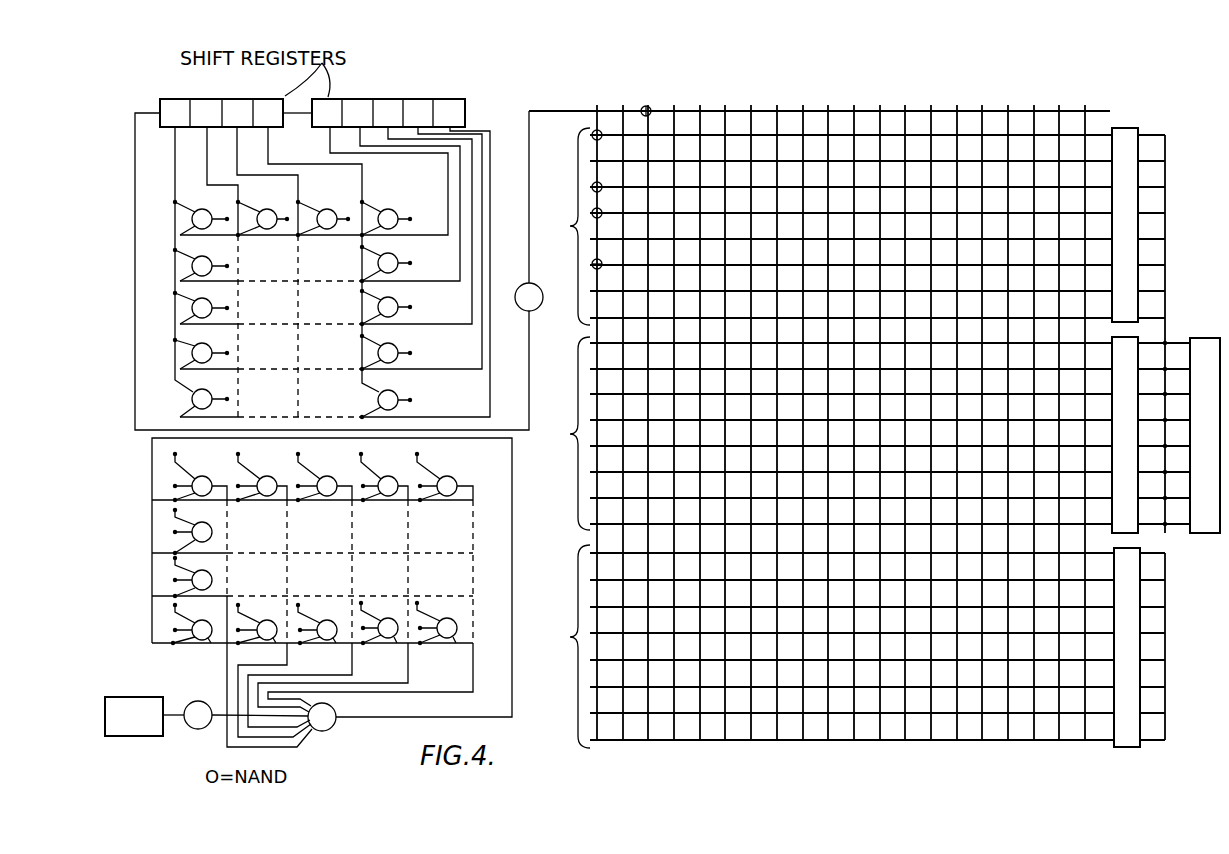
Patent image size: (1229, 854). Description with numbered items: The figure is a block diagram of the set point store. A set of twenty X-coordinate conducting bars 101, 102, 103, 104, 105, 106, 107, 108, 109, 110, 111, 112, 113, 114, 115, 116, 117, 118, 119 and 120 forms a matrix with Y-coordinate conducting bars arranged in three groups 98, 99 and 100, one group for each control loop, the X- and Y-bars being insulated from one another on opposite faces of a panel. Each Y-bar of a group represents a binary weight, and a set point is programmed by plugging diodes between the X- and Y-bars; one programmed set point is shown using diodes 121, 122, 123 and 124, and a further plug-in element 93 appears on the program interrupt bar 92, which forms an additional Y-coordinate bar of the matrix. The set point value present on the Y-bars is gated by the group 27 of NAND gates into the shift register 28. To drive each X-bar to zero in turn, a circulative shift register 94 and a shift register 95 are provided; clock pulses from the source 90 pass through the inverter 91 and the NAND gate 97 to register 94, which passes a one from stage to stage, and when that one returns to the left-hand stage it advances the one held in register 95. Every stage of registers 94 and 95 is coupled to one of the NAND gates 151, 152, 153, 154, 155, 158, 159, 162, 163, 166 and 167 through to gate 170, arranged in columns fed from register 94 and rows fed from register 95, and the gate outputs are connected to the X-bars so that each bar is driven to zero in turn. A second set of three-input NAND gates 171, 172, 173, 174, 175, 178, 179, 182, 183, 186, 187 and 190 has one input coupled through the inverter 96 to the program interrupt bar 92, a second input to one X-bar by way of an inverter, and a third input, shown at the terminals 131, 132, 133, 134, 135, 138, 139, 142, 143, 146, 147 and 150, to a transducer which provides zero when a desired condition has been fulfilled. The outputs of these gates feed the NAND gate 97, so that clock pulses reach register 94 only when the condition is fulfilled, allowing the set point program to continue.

The group of NAND gates 27 is at (1138, 128).
The shift register 28 is at (1207, 338).
The clock pulse source 90 is at (150, 737).
The inverter 91 is at (187, 725).
The program interrupt bar 92 is at (1090, 111).
The connection point 93 is at (651, 110).
The circulative shift register 94 is at (237, 101).
The shift register 95 is at (386, 99).
The inverter 96 is at (518, 287).
The NAND gate 97 is at (332, 729).
The group of Y-coordinate conducting bars 98 is at (854, 226).
The group of Y-coordinate conducting bars 99 is at (866, 433).
The group of Y-coordinate conducting bars 100 is at (850, 646).
The X-coordinate conducting bar 101 is at (378, 437).
The X-coordinate conducting bar 102 is at (391, 437).
The X-coordinate conducting bar 103 is at (404, 437).
The X-coordinate conducting bar 104 is at (417, 437).
The X-coordinate conducting bar 105 is at (462, 437).
The X-coordinate conducting bar 106 is at (725, 437).
The X-coordinate conducting bar 107 is at (751, 437).
The X-coordinate conducting bar 108 is at (224, 662).
The X-coordinate conducting bar 109 is at (520, 437).
The X-coordinate conducting bar 110 is at (828, 437).
The X-coordinate conducting bar 111 is at (854, 437).
The X-coordinate conducting bar 112 is at (300, 630).
The X-coordinate conducting bar 113 is at (570, 437).
The X-coordinate conducting bar 114 is at (931, 437).
The X-coordinate conducting bar 115 is at (957, 437).
The X-coordinate conducting bar 116 is at (363, 628).
The X-coordinate conducting bar 117 is at (620, 437).
The X-coordinate conducting bar 118 is at (1034, 437).
The X-coordinate conducting bar 119 is at (1059, 437).
The X-coordinate conducting bar 120 is at (420, 628).
The diode 121 is at (600, 132).
The diode 122 is at (600, 184).
The diode 123 is at (600, 210).
The diode 124 is at (601, 262).
The input terminal 131 is at (190, 458).
The input terminal 132 is at (190, 512).
The input terminal 133 is at (190, 560).
The input terminal 134 is at (190, 609).
The input terminal 135 is at (253, 458).
The input terminal 138 is at (254, 609).
The input terminal 139 is at (313, 458).
The input terminal 142 is at (314, 609).
The input terminal 143 is at (376, 458).
The input terminal 146 is at (376, 607).
The input terminal 147 is at (433, 458).
The input terminal 150 is at (433, 607).
The NAND gate 151 is at (201, 213).
The NAND gate 152 is at (262, 214).
The NAND gate 153 is at (323, 214).
The NAND gate 154 is at (386, 214).
The NAND gate 155 is at (192, 266).
The NAND gate 158 is at (386, 260).
The NAND gate 159 is at (192, 308).
The NAND gate 162 is at (386, 303).
The NAND gate 163 is at (192, 353).
The NAND gate 166 is at (386, 349).
The NAND gate 167 is at (192, 399).
The NAND gate 170 is at (378, 402).
The NAND gate 171 is at (200, 480).
The NAND gate 172 is at (210, 525).
The NAND gate 173 is at (210, 573).
The NAND gate 174 is at (195, 643).
The NAND gate 175 is at (261, 480).
The NAND gate 178 is at (260, 643).
The NAND gate 179 is at (324, 480).
The NAND gate 182 is at (323, 642).
The NAND gate 183 is at (384, 480).
The NAND gate 186 is at (381, 642).
The NAND gate 187 is at (445, 480).
The NAND gate 190 is at (442, 640).